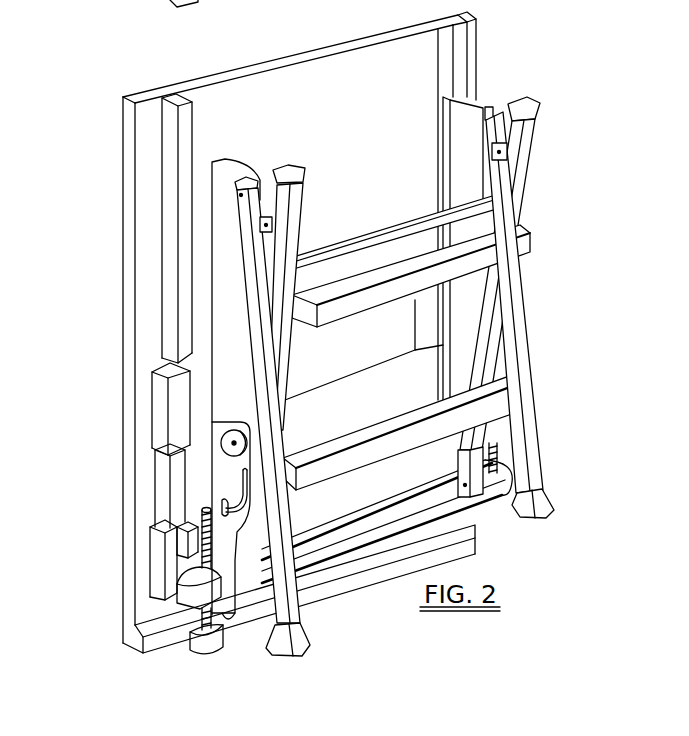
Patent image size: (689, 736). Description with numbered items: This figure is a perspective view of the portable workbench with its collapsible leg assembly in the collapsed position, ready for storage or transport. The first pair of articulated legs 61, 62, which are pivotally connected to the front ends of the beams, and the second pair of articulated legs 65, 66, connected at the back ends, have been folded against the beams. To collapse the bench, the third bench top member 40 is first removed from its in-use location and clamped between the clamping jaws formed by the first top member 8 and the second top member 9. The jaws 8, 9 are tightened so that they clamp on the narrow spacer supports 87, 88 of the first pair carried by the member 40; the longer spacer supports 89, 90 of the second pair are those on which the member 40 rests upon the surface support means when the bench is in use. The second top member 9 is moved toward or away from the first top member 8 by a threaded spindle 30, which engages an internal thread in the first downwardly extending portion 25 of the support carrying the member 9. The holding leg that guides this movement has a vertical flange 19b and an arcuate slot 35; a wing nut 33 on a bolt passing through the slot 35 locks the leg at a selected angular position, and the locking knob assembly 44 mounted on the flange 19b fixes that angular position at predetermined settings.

The first top member 8 is at (153, 392).
The second top member 9 is at (156, 551).
The vertical flange 19b is at (223, 545).
The first downwardly extending portion 25 is at (207, 593).
The threaded spindle 30 is at (197, 538).
The wing nut 33 is at (220, 502).
The arcuate slot 35 is at (242, 487).
The third bench top member 40 is at (147, 250).
The locking knob assembly 44 is at (223, 438).
The articulated leg 61 is at (510, 160).
The articulated leg 62 is at (278, 213).
The articulated leg 65 is at (525, 473).
The articulated leg 66 is at (253, 302).
The spacer support 87 is at (167, 483).
The spacer support 88 is at (420, 368).
The spacer support 89 is at (170, 172).
The spacer support 90 is at (462, 62).